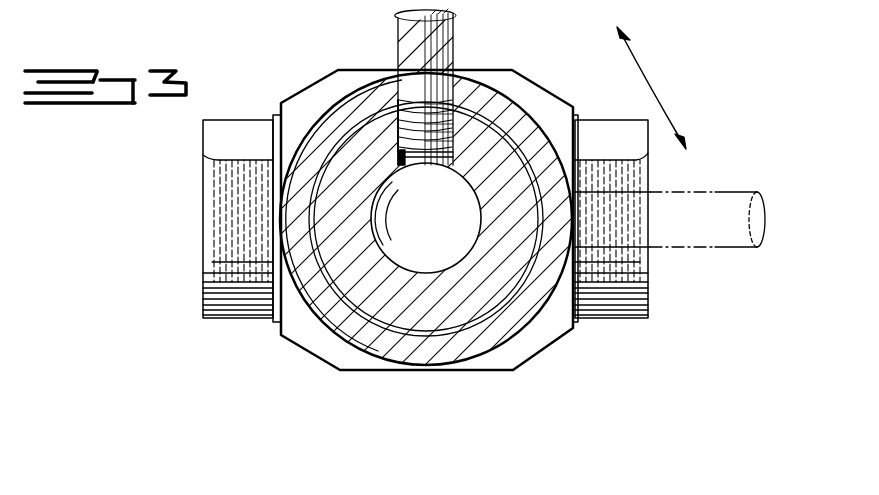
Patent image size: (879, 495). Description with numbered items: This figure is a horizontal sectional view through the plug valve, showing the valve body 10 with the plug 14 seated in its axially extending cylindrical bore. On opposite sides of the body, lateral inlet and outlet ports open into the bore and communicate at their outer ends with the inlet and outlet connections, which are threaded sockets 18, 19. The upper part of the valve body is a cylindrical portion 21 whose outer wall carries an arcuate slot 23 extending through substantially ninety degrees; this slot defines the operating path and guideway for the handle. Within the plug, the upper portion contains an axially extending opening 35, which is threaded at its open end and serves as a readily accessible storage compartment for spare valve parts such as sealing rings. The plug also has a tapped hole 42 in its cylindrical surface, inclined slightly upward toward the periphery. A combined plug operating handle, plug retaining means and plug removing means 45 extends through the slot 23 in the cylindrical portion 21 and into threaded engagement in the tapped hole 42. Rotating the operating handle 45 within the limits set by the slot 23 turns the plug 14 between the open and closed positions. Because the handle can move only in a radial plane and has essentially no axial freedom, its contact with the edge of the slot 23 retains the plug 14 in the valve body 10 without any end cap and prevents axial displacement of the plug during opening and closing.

The valve body 10 is at (562, 101).
The plug 14 is at (467, 315).
The threaded socket 18 is at (220, 195).
The threaded socket 19 is at (640, 266).
The cylindrical portion 21 is at (483, 78).
The arcuate slot 23 is at (511, 113).
The axially extending opening 35 is at (426, 218).
The tapped hole 42 is at (393, 125).
The operating handle 45 is at (443, 52).